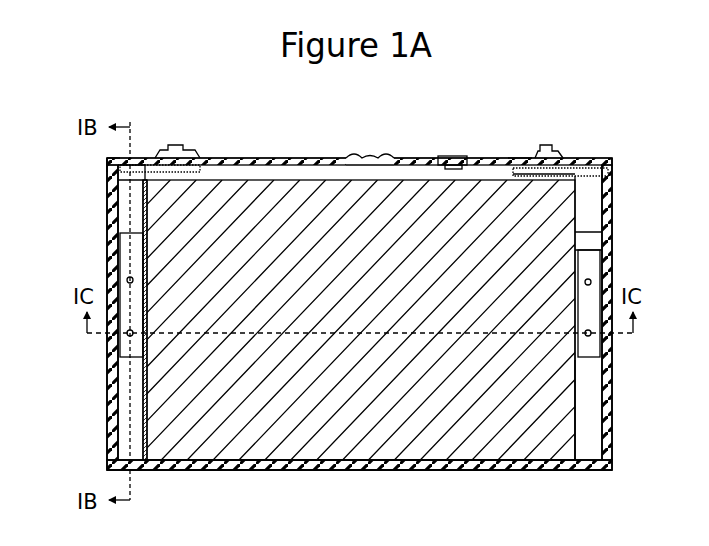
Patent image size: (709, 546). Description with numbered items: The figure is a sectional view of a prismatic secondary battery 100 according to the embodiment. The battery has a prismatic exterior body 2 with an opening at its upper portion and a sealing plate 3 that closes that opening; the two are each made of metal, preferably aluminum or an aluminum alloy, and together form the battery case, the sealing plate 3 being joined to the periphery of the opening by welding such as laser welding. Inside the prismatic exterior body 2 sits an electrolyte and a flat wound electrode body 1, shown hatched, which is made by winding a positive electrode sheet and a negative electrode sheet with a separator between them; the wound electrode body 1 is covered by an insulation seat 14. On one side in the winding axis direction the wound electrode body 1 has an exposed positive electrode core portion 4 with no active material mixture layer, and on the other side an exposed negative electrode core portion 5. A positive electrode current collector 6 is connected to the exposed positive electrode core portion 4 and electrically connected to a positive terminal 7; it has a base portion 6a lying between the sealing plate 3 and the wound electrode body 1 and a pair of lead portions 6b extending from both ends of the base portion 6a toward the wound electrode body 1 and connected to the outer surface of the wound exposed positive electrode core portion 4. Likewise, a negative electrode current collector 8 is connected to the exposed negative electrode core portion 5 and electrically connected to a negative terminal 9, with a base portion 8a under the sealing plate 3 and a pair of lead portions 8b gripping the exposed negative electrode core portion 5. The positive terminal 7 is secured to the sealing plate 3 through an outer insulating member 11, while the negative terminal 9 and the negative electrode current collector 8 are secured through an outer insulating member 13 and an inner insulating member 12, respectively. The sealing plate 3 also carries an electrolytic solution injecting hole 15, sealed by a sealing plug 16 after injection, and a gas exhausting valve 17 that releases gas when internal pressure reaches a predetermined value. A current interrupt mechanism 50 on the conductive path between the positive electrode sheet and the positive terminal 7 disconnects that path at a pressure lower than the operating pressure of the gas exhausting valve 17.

The prismatic secondary battery 100 is at (286, 81).
The wound electrode body 1 is at (472, 440).
The prismatic exterior body 2 is at (612, 445).
The sealing plate 3 is at (290, 160).
The exposed positive electrode core portion 4 is at (593, 408).
The exposed negative electrode core portion 5 is at (125, 420).
The positive electrode current collector 6 is at (588, 181).
The base portion 6a is at (558, 176).
The lead portions 6b is at (595, 264).
The positive terminal 7 is at (548, 145).
The negative electrode current collector 8 is at (125, 176).
The base portion 8a is at (112, 158).
The lead portions 8b is at (128, 266).
The negative terminal 9 is at (183, 146).
The outer insulating member 11 is at (519, 160).
The inner insulating member 12 is at (148, 160).
The outer insulating member 13 is at (194, 160).
The insulation seat 14 is at (586, 468).
The electrolytic solution injecting hole 15 is at (444, 157).
The sealing plug 16 is at (457, 157).
The gas exhausting valve 17 is at (357, 160).
The current interrupt mechanism 50 is at (610, 168).